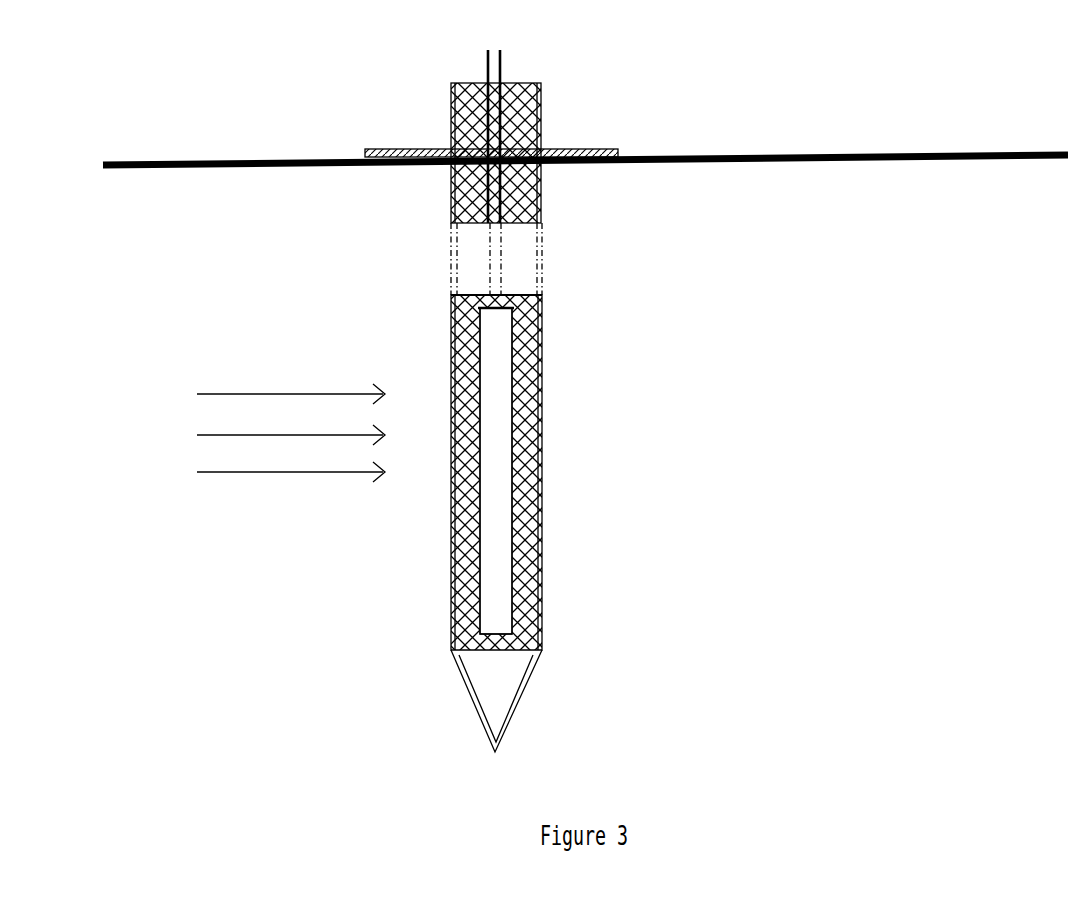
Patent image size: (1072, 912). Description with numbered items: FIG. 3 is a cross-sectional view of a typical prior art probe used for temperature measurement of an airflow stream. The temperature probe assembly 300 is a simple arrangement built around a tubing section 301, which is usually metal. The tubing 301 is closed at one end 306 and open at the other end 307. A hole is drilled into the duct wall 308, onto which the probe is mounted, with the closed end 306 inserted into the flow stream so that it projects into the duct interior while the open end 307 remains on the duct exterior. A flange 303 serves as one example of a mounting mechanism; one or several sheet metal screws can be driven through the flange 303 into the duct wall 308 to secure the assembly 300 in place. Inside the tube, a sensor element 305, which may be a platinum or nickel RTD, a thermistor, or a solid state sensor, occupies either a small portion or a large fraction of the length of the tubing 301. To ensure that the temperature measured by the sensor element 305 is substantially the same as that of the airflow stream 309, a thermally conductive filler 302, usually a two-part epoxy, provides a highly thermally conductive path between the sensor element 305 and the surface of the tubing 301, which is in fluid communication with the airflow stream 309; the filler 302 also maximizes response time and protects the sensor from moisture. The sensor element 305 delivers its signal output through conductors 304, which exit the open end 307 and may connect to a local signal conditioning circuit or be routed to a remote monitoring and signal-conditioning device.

The temperature probe assembly 300 is at (581, 381).
The tubing section 301 is at (545, 500).
The thermally conductive filler 302 is at (456, 294).
The flange 303 is at (607, 148).
The conductors 304 is at (502, 52).
The sensor element 305 is at (508, 390).
The closed end 306 is at (495, 708).
The open end 307 is at (455, 83).
The duct wall 308 is at (902, 150).
The airflow stream 309 is at (240, 433).